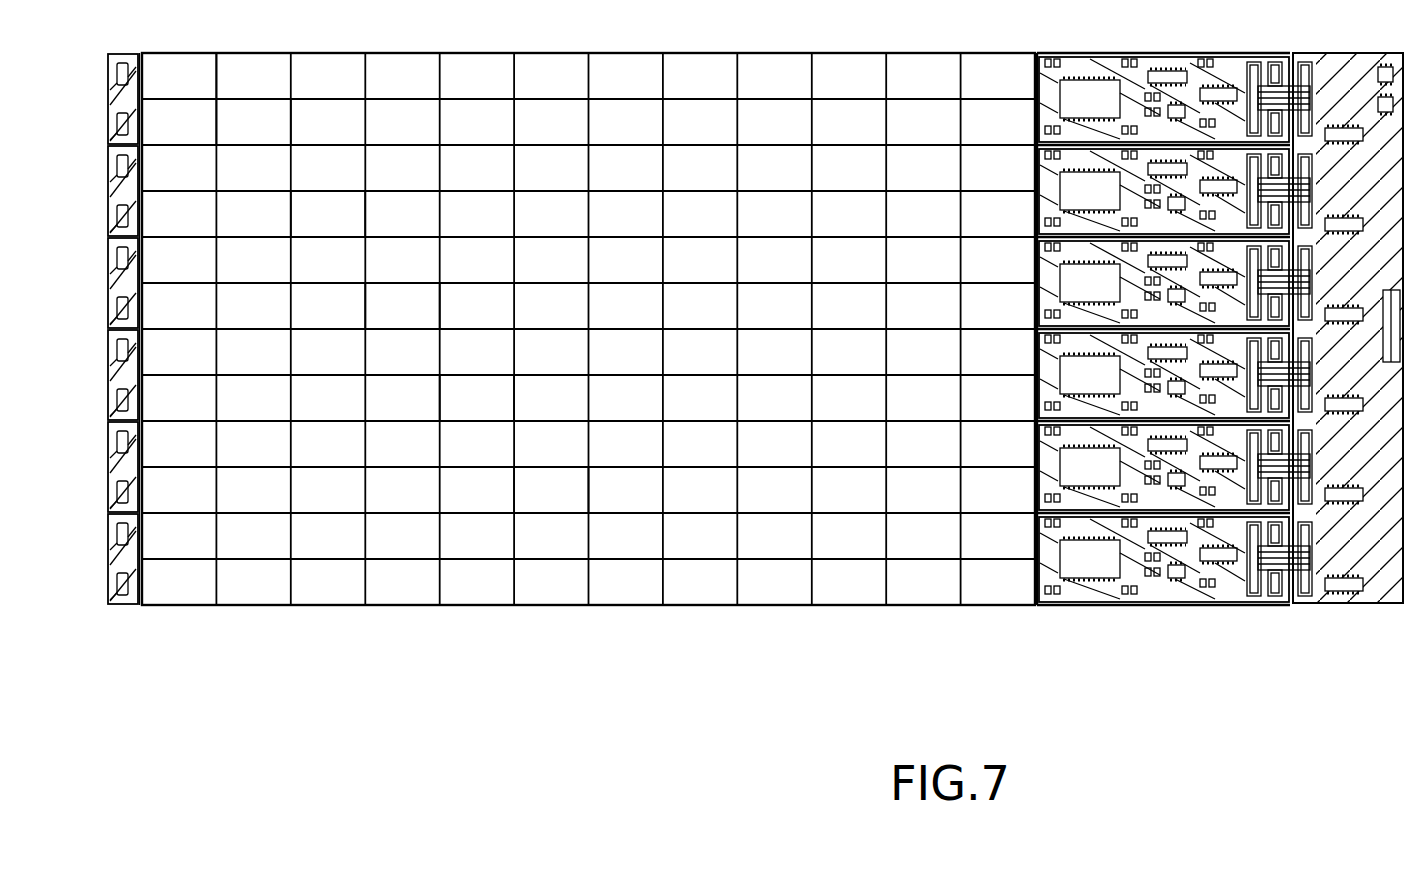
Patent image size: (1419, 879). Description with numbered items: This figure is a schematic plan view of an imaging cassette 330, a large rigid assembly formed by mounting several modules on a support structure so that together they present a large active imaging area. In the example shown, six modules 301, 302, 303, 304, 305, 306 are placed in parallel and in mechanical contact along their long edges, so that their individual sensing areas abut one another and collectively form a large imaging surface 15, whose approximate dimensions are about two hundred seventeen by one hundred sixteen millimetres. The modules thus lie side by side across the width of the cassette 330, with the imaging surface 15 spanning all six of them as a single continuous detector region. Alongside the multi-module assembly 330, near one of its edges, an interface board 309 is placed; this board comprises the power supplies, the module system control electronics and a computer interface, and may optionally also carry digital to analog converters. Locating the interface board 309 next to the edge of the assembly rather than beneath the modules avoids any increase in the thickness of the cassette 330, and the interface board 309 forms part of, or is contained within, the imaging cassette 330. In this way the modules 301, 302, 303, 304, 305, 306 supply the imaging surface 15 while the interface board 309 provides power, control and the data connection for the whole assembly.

The imaging surface 15 is at (1037, 615).
The module 301 is at (180, 70).
The module 302 is at (260, 160).
The module 303 is at (345, 258).
The module 304 is at (415, 355).
The module 305 is at (487, 443).
The module 306 is at (562, 530).
The interface board 309 is at (1332, 62).
The cassette 330 is at (1403, 682).